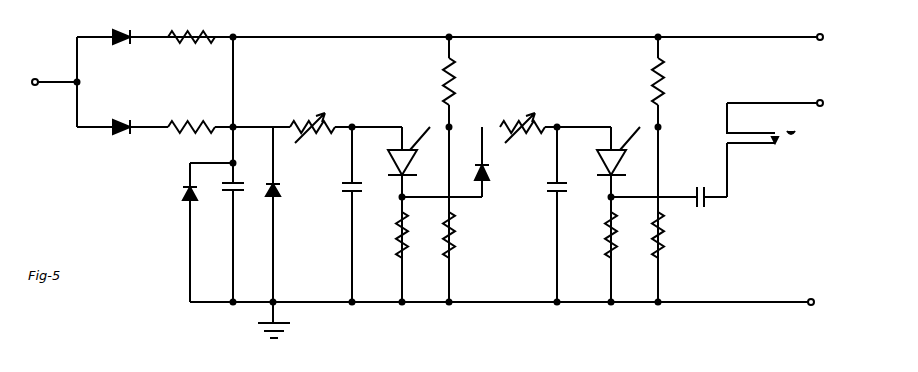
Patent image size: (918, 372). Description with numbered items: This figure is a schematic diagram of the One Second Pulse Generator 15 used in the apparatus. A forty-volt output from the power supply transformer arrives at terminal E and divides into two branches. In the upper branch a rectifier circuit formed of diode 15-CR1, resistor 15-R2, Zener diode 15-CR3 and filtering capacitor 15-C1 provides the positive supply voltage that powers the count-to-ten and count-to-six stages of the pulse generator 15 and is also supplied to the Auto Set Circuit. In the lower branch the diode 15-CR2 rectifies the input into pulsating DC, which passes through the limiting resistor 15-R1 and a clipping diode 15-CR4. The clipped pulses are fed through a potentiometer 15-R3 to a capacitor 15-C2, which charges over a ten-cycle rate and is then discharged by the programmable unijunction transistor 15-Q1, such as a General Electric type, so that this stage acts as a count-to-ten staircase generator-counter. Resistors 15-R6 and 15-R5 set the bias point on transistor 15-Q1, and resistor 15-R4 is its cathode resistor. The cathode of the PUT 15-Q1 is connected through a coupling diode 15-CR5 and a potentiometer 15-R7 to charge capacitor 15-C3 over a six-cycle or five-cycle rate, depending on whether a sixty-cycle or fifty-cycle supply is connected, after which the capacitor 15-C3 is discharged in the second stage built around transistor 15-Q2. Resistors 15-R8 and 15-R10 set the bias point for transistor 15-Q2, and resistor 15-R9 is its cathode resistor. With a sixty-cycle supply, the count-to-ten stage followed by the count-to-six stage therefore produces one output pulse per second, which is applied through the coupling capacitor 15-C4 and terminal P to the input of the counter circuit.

The One Second Pulse Generator 15 is at (519, 29).
The diode 15-CR1 is at (114, 35).
The resistor 15-R2 is at (191, 35).
The diode 15-CR2 is at (106, 136).
The limiting resistor 15-R1 is at (187, 125).
The Zener diode 15-CR3 is at (162, 232).
The filtering capacitor 15-C1 is at (220, 215).
The clipping diode 15-CR4 is at (291, 214).
The potentiometer 15-R3 is at (310, 125).
The capacitor 15-C2 is at (360, 214).
The programmable unijunction transistor 15-Q1 is at (419, 198).
The resistor 15-R6 is at (455, 169).
The cathode resistor 15-R4 is at (402, 239).
The resistor 15-R5 is at (466, 235).
The coupling diode 15-CR5 is at (482, 162).
The potentiometer 15-R7 is at (520, 125).
The capacitor 15-C3 is at (542, 214).
The transistor 15-Q2 is at (626, 201).
The resistor 15-R8 is at (663, 169).
The cathode resistor 15-R9 is at (595, 239).
The resistor 15-R10 is at (675, 245).
The coupling capacitor 15-C4 is at (691, 194).